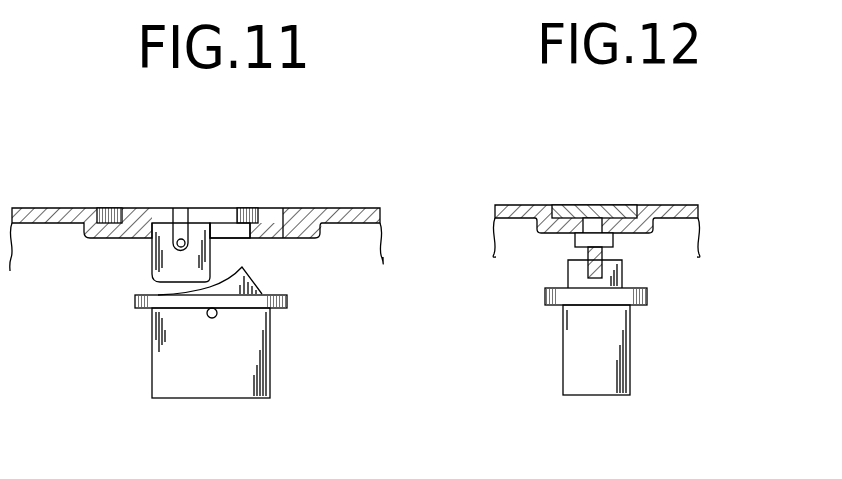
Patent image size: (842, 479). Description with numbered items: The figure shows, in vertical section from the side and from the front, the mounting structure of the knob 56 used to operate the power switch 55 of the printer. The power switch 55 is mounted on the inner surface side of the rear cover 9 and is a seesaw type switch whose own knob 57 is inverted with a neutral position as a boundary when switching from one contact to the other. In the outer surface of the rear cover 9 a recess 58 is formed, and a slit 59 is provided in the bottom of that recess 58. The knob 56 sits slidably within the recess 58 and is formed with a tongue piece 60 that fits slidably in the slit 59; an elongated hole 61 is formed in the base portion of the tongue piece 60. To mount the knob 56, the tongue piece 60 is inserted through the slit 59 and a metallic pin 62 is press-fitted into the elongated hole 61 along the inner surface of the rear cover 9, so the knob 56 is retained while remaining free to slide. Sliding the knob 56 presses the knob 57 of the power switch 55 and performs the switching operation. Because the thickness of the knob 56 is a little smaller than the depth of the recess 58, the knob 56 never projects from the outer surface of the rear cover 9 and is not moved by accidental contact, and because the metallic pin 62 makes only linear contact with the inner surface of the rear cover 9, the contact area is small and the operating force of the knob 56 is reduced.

In FIG. 11, the rear cover 9 is at (344, 208).
In FIG. 11, the power switch 55 is at (170, 354).
In FIG. 12, the power switch 55 is at (617, 355).
In FIG. 11, the knob 56 is at (108, 208).
In FIG. 12, the knob 56 is at (566, 205).
In FIG. 11, the knob 57 is at (260, 278).
In FIG. 11, the recess 58 is at (283, 208).
In FIG. 11, the slit 59 is at (231, 226).
In FIG. 11, the tongue piece 60 is at (158, 266).
In FIG. 12, the tongue piece 60 is at (592, 272).
In FIG. 11, the elongated hole 61 is at (178, 238).
In FIG. 11, the metallic pin 62 is at (183, 238).
In FIG. 12, the metallic pin 62 is at (613, 242).